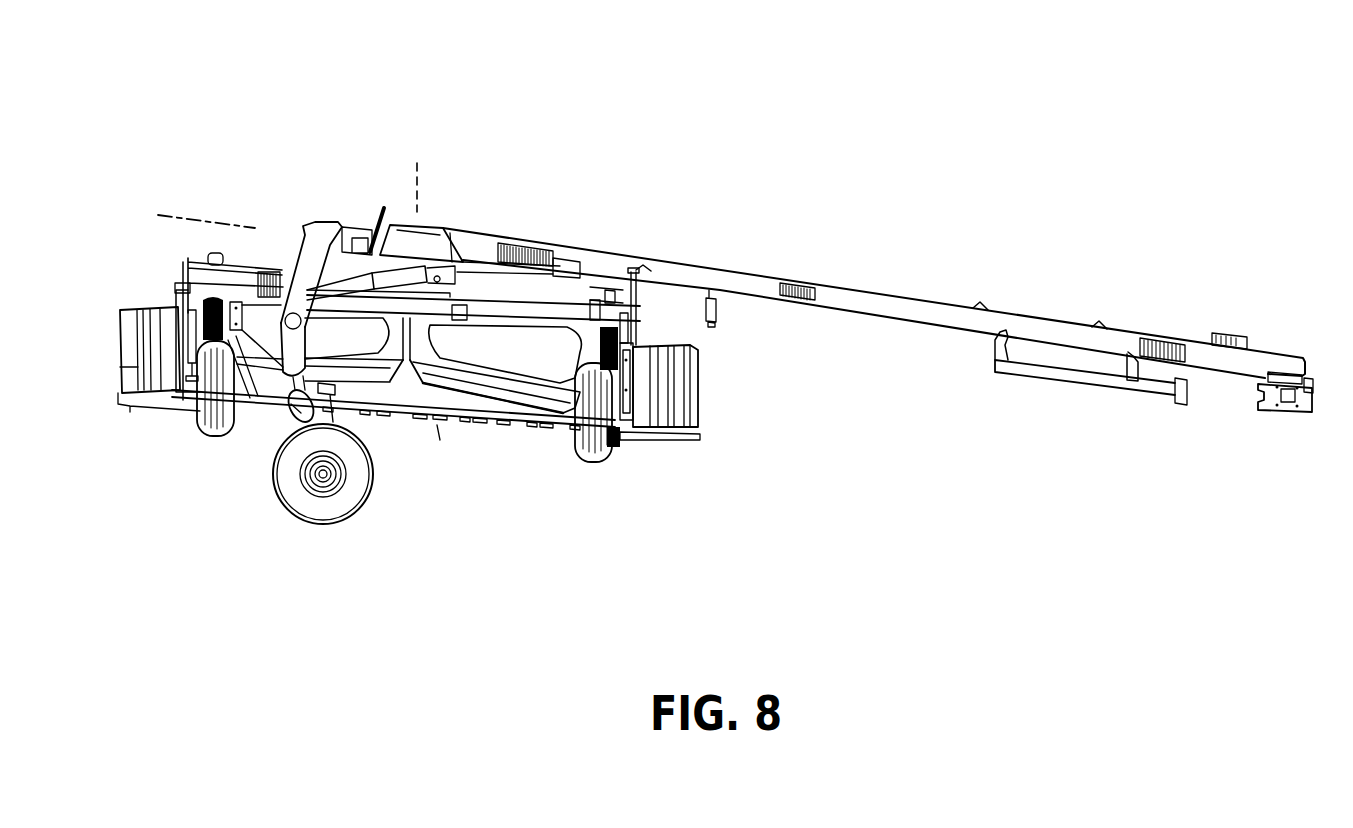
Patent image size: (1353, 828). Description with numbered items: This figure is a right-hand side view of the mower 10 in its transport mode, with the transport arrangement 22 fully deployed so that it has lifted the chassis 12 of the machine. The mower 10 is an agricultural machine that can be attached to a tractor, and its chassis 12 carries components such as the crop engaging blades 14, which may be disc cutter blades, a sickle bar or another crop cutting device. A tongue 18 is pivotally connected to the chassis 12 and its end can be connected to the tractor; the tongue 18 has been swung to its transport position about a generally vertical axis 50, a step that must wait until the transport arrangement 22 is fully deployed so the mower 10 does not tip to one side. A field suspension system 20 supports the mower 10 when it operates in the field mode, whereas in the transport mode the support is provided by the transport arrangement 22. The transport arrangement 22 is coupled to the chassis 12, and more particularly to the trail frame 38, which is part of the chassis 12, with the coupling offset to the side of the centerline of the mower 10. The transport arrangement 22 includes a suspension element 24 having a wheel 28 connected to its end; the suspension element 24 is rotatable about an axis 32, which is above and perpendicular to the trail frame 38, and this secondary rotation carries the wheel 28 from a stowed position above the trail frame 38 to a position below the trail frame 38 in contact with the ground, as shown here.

The mower 10 is at (774, 97).
The chassis 12 is at (710, 413).
The crop engaging blades 14 is at (438, 425).
The tongue 18 is at (920, 298).
The field suspension system 20 is at (198, 448).
The transport arrangement 22 is at (343, 207).
The suspension element 24 is at (290, 412).
The wheel 28 is at (352, 499).
The axis 32 is at (203, 212).
The trail frame 38 is at (640, 312).
The vertical axis 50 is at (418, 182).